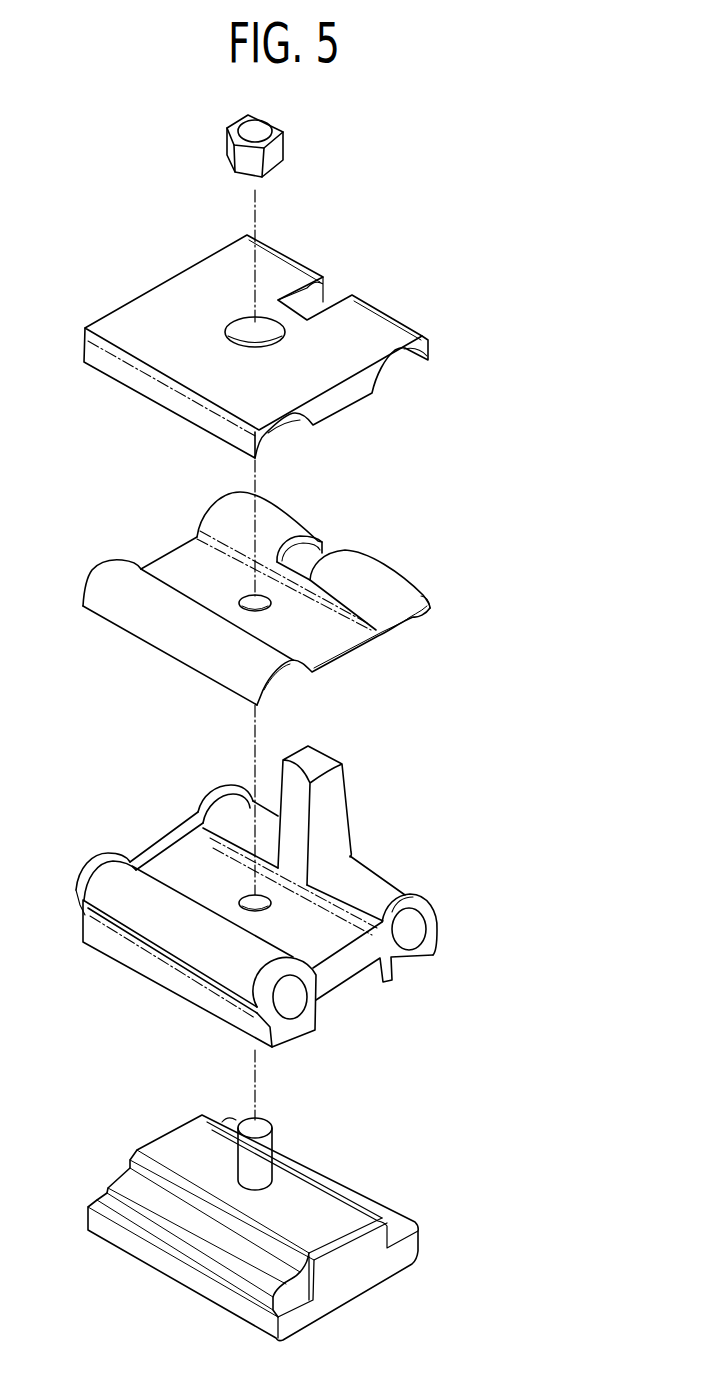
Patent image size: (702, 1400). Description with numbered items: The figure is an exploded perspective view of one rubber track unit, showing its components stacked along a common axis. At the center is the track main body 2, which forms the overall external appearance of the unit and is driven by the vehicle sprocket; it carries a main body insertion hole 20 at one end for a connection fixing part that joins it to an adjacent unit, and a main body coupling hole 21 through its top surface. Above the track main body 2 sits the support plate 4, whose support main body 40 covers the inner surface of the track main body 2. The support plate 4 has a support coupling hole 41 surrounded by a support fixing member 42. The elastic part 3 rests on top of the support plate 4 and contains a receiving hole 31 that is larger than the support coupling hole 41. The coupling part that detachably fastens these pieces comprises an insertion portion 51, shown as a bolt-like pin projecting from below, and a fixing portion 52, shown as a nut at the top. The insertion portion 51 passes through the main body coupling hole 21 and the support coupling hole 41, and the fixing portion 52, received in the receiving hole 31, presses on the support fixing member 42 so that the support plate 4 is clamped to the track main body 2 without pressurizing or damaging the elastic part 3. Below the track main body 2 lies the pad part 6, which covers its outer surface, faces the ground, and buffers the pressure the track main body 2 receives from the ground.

The fixing portion 52 is at (275, 150).
The elastic part 3 is at (314, 333).
The receiving hole 31 is at (248, 330).
The support plate 4 is at (313, 598).
The support main body 40 is at (323, 642).
The support coupling hole 41 is at (312, 542).
The support fixing member 42 is at (237, 600).
The track main body 2 is at (310, 896).
The main body coupling hole 21 is at (258, 903).
The main body insertion hole 20 is at (405, 940).
The insertion portion 51 is at (257, 1157).
The pad part 6 is at (407, 1250).